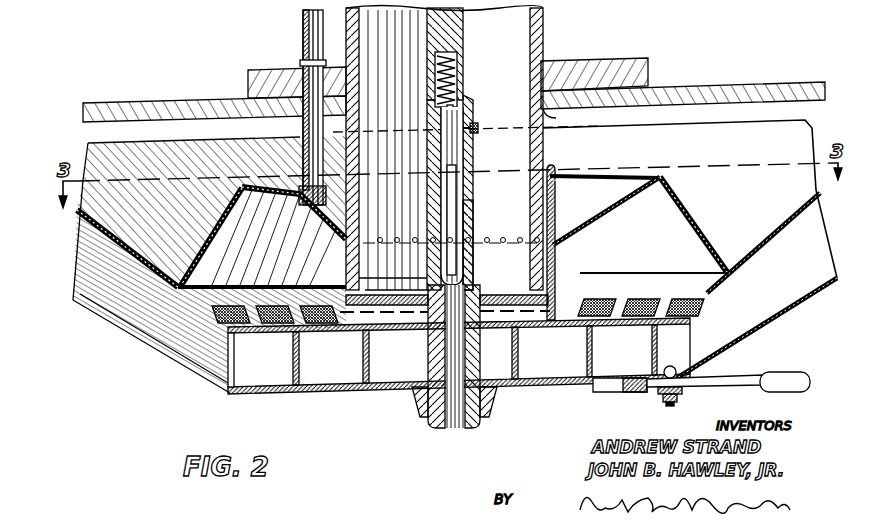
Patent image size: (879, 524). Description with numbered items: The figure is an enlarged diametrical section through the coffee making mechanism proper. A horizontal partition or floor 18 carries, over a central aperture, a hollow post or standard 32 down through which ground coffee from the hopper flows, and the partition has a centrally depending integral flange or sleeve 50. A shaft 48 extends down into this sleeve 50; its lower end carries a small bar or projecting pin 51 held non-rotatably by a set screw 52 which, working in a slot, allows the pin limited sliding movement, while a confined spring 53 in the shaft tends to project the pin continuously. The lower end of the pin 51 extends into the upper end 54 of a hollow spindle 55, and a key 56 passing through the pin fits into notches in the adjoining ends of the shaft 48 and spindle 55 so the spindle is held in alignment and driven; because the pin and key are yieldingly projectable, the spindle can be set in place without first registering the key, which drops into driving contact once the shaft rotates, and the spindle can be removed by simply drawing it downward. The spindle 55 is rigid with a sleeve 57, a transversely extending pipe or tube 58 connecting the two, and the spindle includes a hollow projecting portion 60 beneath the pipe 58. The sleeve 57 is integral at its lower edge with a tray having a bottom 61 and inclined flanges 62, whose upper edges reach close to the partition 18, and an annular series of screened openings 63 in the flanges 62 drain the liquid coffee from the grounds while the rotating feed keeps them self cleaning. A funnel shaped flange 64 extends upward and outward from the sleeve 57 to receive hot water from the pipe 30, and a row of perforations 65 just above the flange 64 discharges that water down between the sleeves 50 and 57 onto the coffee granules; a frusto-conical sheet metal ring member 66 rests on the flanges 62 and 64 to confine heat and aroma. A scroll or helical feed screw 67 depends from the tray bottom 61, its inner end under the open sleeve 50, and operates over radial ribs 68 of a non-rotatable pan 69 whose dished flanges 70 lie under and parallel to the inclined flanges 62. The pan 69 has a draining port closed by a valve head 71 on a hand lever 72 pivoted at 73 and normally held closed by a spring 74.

The horizontal partition or floor 18 is at (703, 94).
The pipe 30 is at (301, 34).
The hollow post or standard 32 is at (541, 22).
The shaft 48 is at (463, 32).
The depending integral flange or sleeve 50 is at (547, 147).
The bar or projecting pin 51 is at (455, 112).
The set screw 52 is at (479, 128).
The confined spring 53 is at (458, 76).
The upper end of hollow spindle 54 is at (462, 166).
The hollow spindle 55 is at (475, 222).
The key 56 is at (470, 191).
The sleeve 57 is at (556, 193).
The transversely extending pipe or tube 58 is at (552, 292).
The hollow projecting portion 60 is at (440, 432).
The bottom of tray 61 is at (322, 333).
The inclined flanges 62 is at (783, 229).
The screened openings 63 is at (641, 298).
The funnel shaped flange 64 is at (620, 202).
The perforations 65 is at (345, 244).
The frusto-conical sheet metal ring member 66 is at (698, 222).
The scroll or helical feed screw 67 is at (370, 348).
The radial ribs 68 is at (320, 385).
The non-rotatable pan 69 is at (320, 392).
The dished flanges 70 is at (807, 300).
The valve head 71 is at (597, 390).
The hand lever 72 is at (776, 372).
The pivot 73 is at (682, 393).
The spring 74 is at (666, 392).